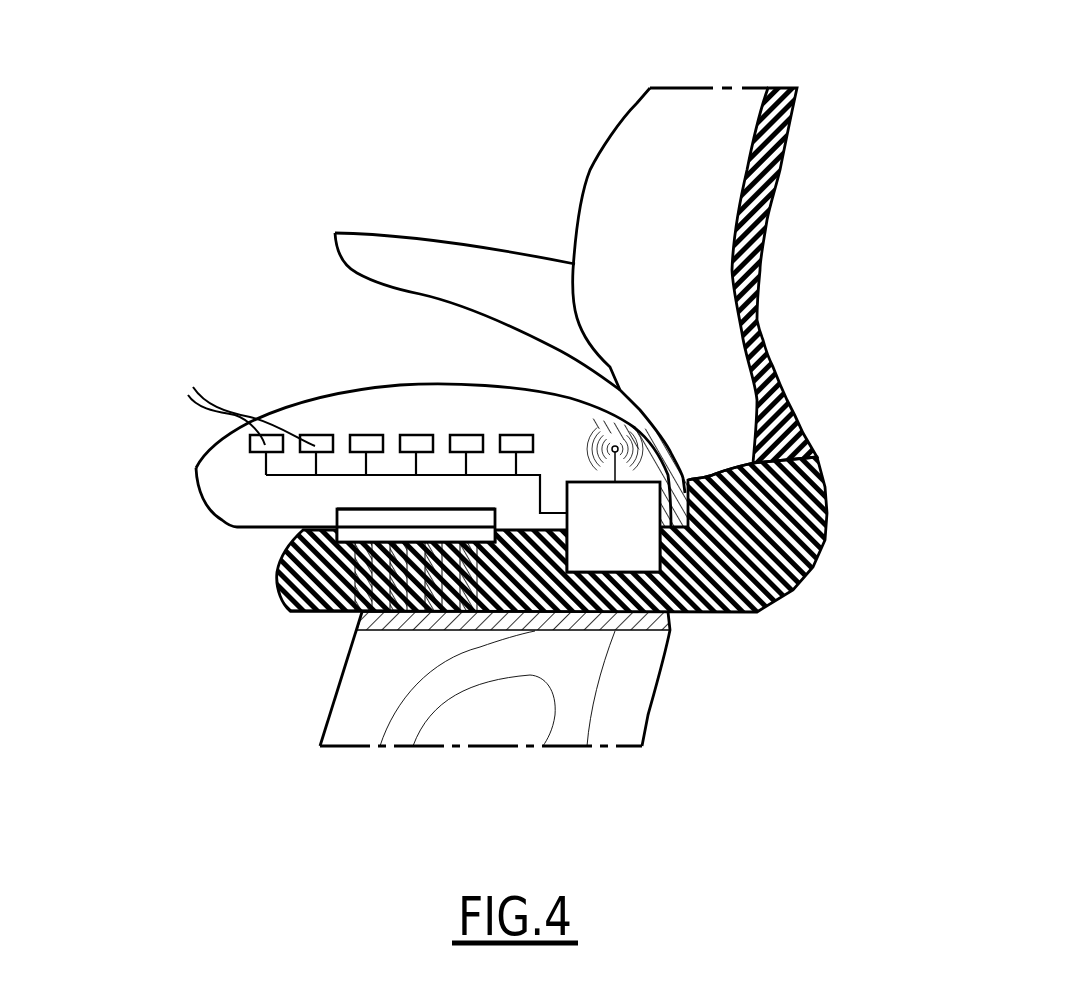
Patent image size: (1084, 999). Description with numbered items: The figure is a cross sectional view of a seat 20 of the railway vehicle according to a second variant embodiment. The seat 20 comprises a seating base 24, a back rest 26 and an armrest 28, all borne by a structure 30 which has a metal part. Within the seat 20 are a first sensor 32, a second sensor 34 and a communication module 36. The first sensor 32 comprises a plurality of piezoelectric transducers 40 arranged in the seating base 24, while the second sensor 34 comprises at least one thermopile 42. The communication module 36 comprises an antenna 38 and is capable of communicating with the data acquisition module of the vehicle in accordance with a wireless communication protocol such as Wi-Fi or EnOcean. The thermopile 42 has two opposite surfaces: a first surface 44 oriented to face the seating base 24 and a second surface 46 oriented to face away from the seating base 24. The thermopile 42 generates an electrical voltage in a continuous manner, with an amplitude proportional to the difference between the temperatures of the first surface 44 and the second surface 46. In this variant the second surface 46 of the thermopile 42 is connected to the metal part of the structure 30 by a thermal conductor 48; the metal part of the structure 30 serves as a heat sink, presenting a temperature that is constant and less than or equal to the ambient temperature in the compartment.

The seat 20 is at (372, 117).
The seating base 24 is at (298, 394).
The back rest 26 is at (690, 247).
The armrest 28 is at (435, 278).
The structure 30 is at (793, 136).
The first sensor 32 is at (400, 420).
The second sensor 34 is at (318, 517).
The communication module 36 is at (600, 545).
The antenna 38 is at (592, 473).
The piezoelectric transducers 40 is at (241, 402).
The thermopile 42 is at (353, 533).
The first surface 44 is at (357, 505).
The second surface 46 is at (310, 611).
The thermal conductor 48 is at (470, 597).